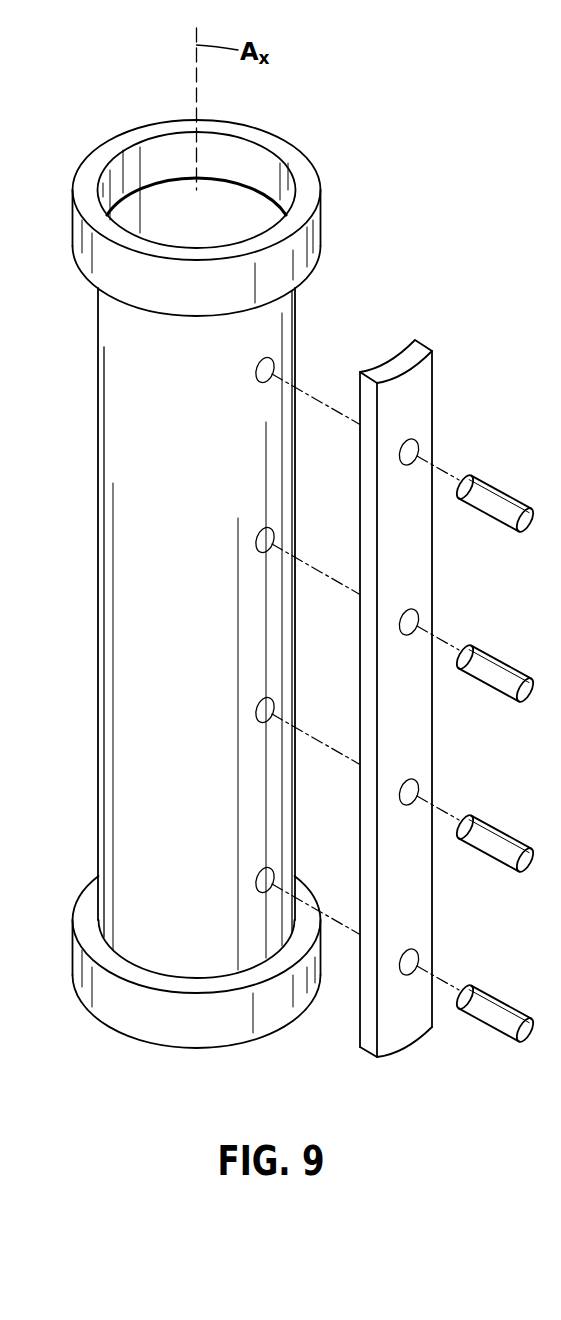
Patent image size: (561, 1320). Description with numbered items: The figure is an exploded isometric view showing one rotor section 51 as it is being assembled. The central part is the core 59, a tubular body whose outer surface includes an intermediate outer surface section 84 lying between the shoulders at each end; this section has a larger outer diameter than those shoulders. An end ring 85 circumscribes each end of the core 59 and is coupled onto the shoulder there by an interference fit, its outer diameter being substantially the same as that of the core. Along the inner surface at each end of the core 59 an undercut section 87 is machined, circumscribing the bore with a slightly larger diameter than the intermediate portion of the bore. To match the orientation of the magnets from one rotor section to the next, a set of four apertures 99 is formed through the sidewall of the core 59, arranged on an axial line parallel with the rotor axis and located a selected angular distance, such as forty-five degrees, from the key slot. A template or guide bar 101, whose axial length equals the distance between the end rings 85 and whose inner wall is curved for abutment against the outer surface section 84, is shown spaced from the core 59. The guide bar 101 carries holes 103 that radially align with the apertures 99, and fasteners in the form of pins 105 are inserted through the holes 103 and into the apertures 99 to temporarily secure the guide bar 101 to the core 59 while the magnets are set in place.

The rotor section 51 is at (351, 138).
The core 59 is at (128, 423).
The intermediate outer surface section 84 is at (133, 743).
The end ring 85 is at (143, 290).
The undercut section 87 is at (170, 157).
The apertures 99 is at (276, 362).
The guide bar 101 is at (408, 402).
The holes 103 is at (418, 449).
The pins 105 is at (472, 508).